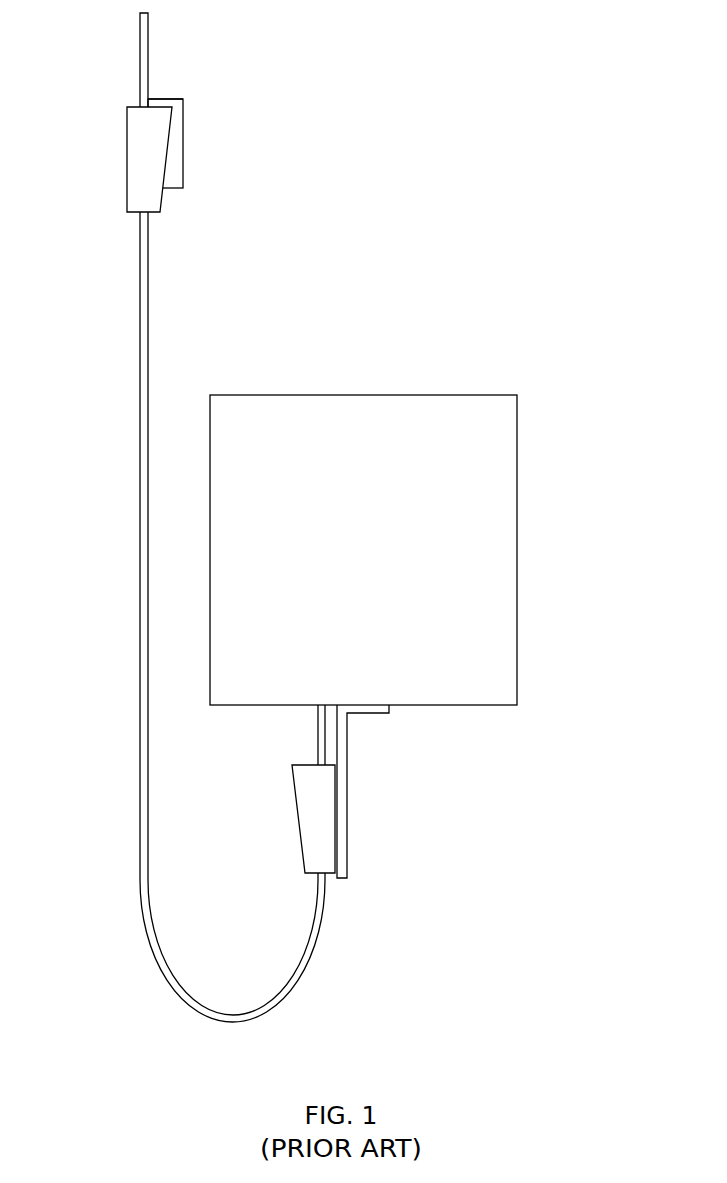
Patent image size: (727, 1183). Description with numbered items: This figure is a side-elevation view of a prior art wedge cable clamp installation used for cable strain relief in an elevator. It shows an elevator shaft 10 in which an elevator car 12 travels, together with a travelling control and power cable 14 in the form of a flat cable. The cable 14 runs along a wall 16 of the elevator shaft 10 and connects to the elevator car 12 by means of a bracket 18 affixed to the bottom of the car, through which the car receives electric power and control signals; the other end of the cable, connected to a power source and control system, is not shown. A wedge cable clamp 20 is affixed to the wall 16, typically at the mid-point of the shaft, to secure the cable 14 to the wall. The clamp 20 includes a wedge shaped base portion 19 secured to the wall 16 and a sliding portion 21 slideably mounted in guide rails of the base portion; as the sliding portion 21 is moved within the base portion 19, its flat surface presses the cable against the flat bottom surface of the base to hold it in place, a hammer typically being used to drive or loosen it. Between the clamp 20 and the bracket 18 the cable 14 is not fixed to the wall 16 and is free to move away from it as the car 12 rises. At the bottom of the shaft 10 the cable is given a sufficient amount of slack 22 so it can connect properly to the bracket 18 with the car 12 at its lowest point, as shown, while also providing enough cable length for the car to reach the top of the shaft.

The elevator shaft 10 is at (557, 245).
The elevator car 12 is at (374, 552).
The travelling control and power cable 14 is at (150, 345).
The wall 16 is at (135, 610).
The bracket 18 is at (348, 825).
The wedge shaped base portion 19 is at (127, 150).
The wedge cable clamp 20 is at (158, 100).
The sliding portion 21 is at (183, 173).
The slack 22 is at (205, 1025).